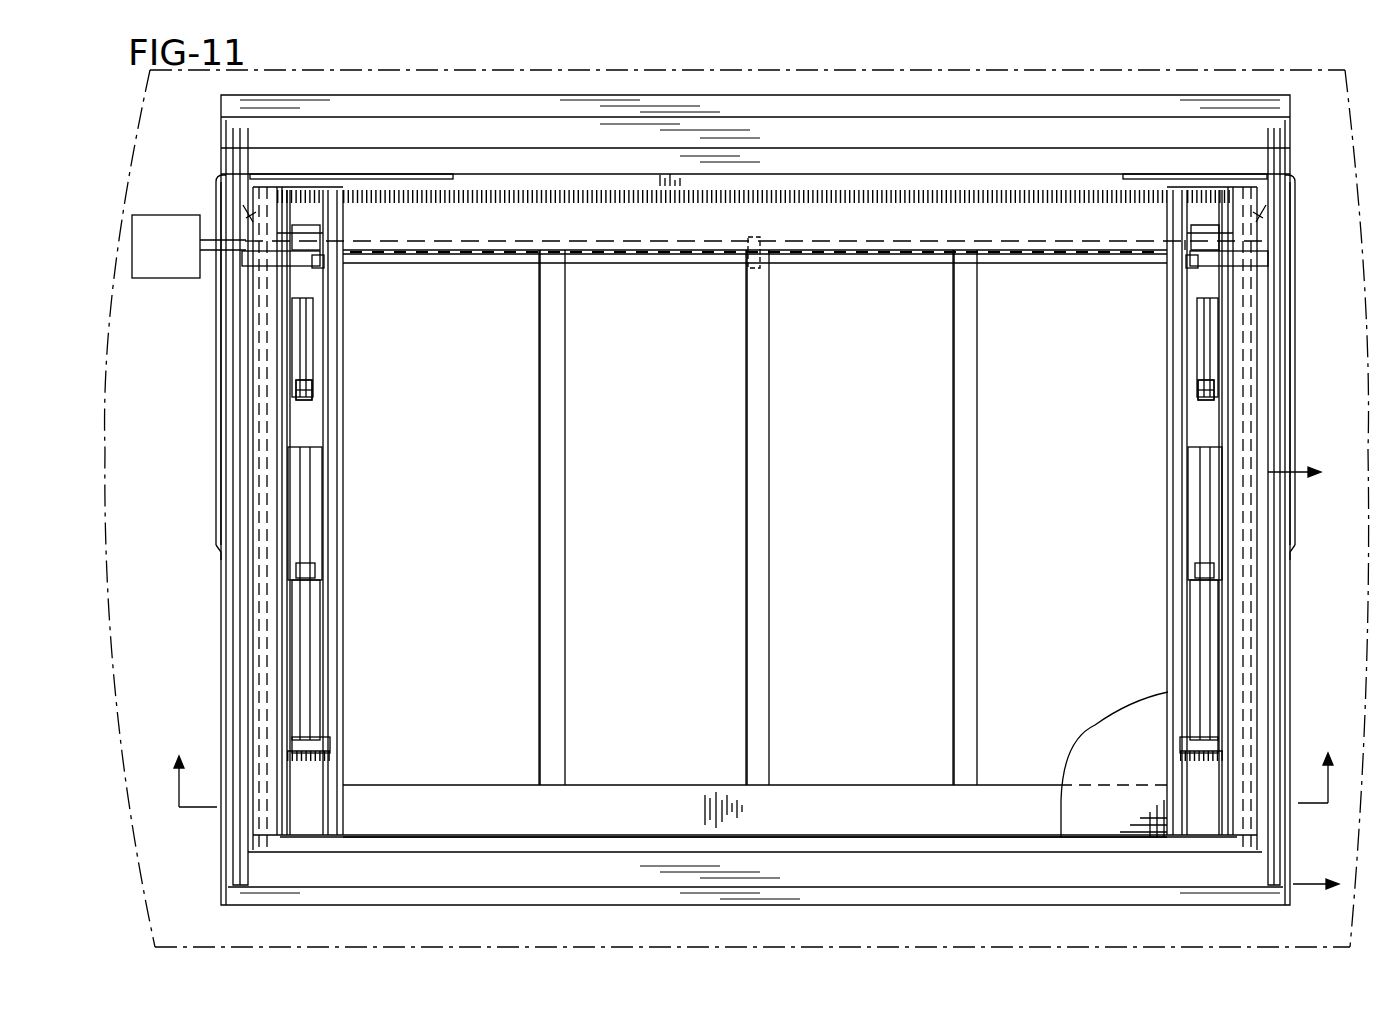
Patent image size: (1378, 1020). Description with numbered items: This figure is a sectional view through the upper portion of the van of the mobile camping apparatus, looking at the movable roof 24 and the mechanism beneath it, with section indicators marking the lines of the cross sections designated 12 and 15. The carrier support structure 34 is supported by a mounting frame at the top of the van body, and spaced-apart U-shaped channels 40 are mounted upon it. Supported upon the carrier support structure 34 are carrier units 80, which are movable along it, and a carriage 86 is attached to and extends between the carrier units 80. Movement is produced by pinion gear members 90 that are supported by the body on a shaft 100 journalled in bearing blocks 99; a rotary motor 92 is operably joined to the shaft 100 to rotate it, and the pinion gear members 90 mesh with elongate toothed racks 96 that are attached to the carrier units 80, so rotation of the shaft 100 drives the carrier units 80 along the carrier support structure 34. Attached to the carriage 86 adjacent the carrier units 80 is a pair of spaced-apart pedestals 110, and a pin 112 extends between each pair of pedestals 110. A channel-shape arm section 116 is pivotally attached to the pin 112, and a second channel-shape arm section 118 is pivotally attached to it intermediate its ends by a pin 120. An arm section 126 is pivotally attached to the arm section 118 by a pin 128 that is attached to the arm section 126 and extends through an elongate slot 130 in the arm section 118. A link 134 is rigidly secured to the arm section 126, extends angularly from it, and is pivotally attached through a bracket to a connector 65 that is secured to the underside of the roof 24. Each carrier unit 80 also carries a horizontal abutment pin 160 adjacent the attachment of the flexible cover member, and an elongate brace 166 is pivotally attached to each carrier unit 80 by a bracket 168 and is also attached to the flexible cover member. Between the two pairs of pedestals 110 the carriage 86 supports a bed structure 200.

The roof 24 is at (122, 150).
The carrier support structure 34 is at (762, 100).
The U-shaped channel 40 is at (232, 832).
The connector 65 is at (274, 255).
The carrier unit 80 is at (247, 357).
The carriage 86 is at (648, 782).
The pinion gear member 90 is at (241, 215).
The rotary motor 92 is at (179, 259).
The toothed rack 96 is at (262, 398).
The bearing block 99 is at (748, 237).
The shaft 100 is at (634, 238).
The pedestal 110 is at (326, 758).
The pin 112 is at (308, 740).
The channel-shape arm section 116 is at (312, 634).
The channel-shape arm section 118 is at (303, 481).
The pin 120 is at (305, 570).
The arm section 126 is at (306, 318).
The pin 128 is at (305, 385).
The elongate slot 130 is at (755, 390).
The link 134 is at (322, 262).
The horizontal abutment pin 160 is at (300, 238).
The elongate brace 166 is at (454, 178).
The bracket 168 is at (221, 553).
The bed structure 200 is at (1111, 723).
The section line 12 is at (1313, 689).
The section line 15 is at (756, 768).